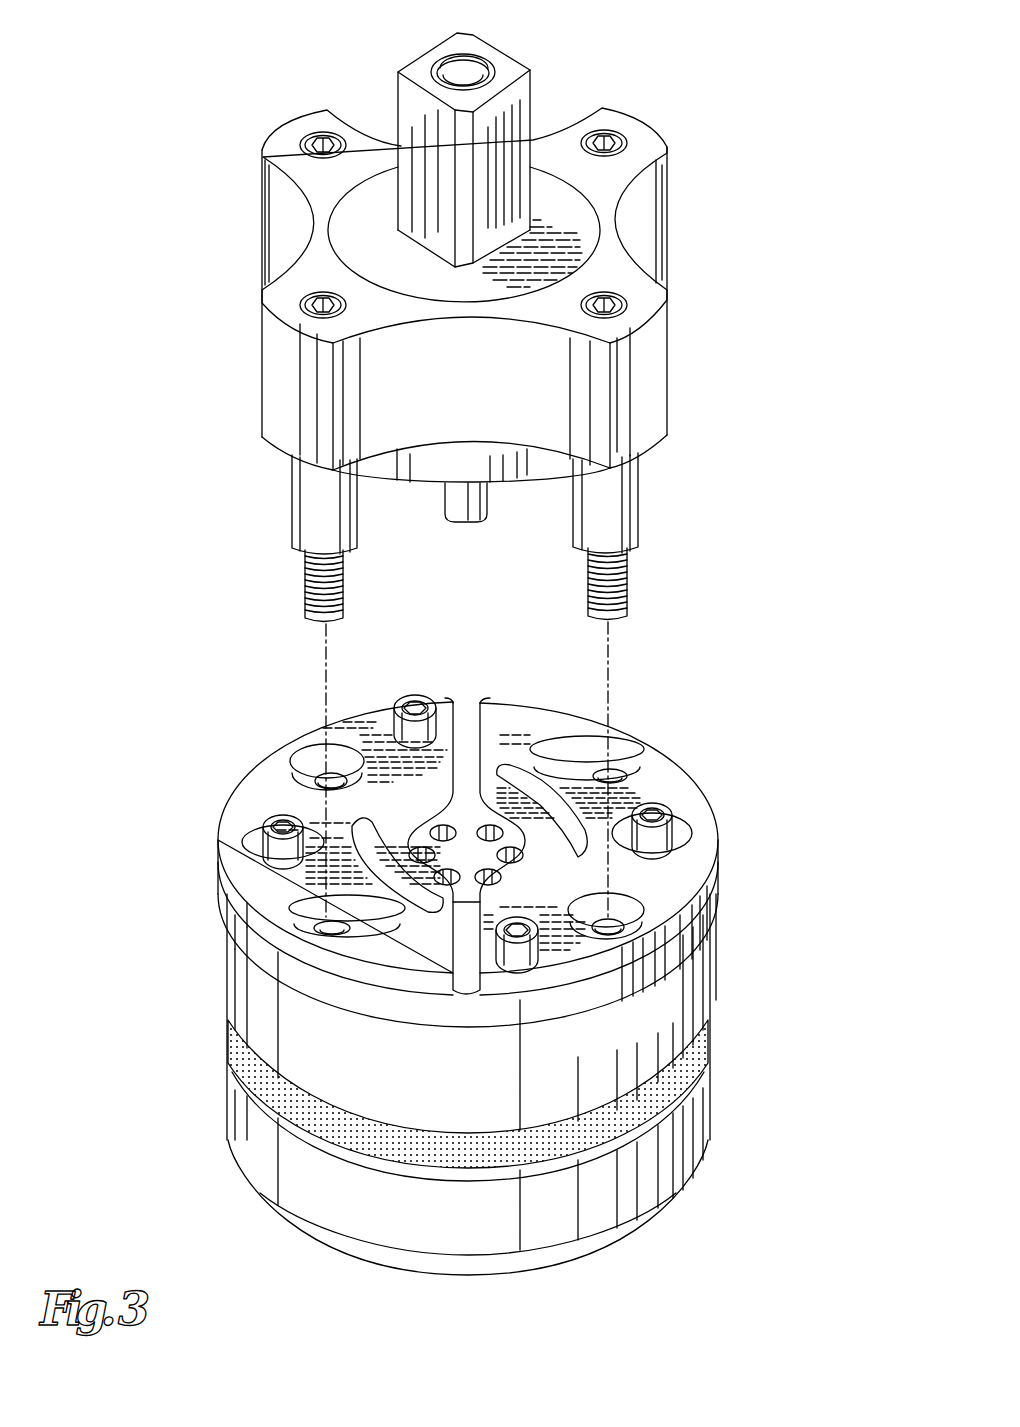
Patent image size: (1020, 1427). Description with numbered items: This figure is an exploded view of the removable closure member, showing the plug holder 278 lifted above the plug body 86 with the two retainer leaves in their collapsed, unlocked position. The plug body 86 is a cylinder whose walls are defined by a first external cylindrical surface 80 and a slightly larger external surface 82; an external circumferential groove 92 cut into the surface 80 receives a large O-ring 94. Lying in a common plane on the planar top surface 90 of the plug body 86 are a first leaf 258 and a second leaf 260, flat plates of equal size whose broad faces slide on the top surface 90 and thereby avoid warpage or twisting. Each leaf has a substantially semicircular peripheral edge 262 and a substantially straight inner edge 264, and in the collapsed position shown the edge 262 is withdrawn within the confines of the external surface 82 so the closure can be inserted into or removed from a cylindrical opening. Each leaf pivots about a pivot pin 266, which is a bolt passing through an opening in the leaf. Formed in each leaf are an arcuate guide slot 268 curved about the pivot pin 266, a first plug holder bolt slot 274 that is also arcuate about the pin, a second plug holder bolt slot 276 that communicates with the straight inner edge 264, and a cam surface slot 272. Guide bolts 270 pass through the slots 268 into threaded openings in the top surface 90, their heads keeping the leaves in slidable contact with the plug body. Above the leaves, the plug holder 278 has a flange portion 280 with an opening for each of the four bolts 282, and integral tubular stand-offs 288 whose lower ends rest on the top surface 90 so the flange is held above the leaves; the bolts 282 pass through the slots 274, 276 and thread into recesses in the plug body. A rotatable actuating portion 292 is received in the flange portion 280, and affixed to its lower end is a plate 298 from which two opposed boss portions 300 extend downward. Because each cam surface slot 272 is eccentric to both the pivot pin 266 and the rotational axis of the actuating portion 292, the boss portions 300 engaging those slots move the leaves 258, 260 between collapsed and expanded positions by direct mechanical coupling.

The plug holder 278 is at (618, 102).
The flange portion 280 is at (606, 264).
The rotatable actuating portion 292 is at (393, 103).
The bolts 282 is at (303, 135).
The tubular stand-offs 288 is at (297, 505).
The plate 298 is at (498, 481).
The boss portions 300 is at (465, 524).
The first leaf 258 is at (270, 773).
The semicircular peripheral edge 262 is at (220, 882).
The first external cylindrical surface 80 is at (240, 978).
The plug body 86 is at (208, 1000).
The external surface 82 is at (712, 906).
The external circumferential groove 92 is at (357, 1113).
The large O-ring 94 is at (230, 1052).
The top surface 90 is at (463, 747).
The straight inner edge 264 is at (458, 957).
The cam surface slot 272 is at (423, 932).
The second plug holder bolt slot 276 is at (580, 767).
The first plug holder bolt slot 274 is at (310, 757).
The guide bolts 270 is at (263, 822).
The arcuate guide slot 268 is at (250, 835).
The pivot pin 266 is at (418, 694).
The second leaf 260 is at (655, 773).